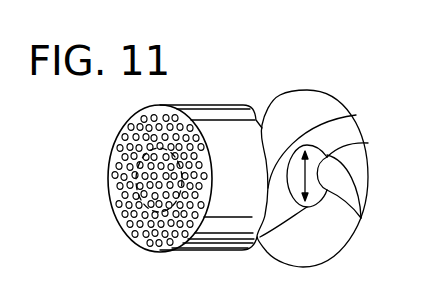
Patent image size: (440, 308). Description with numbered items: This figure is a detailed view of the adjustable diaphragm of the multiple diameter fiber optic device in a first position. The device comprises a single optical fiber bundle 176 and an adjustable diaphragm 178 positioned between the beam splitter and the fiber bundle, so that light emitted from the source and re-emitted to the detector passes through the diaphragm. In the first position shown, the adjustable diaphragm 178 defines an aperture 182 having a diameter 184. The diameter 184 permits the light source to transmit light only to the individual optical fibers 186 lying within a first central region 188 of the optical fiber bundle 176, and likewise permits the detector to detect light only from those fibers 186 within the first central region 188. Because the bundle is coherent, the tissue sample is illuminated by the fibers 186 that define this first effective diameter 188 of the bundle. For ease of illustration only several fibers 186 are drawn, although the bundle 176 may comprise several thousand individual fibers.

The optical fiber bundle 176 is at (216, 112).
The adjustable diaphragm 178 is at (297, 104).
The aperture 182 is at (364, 152).
The diameter 184 is at (358, 218).
The individual optical fibers 186 is at (148, 157).
The first central region 188 is at (120, 186).